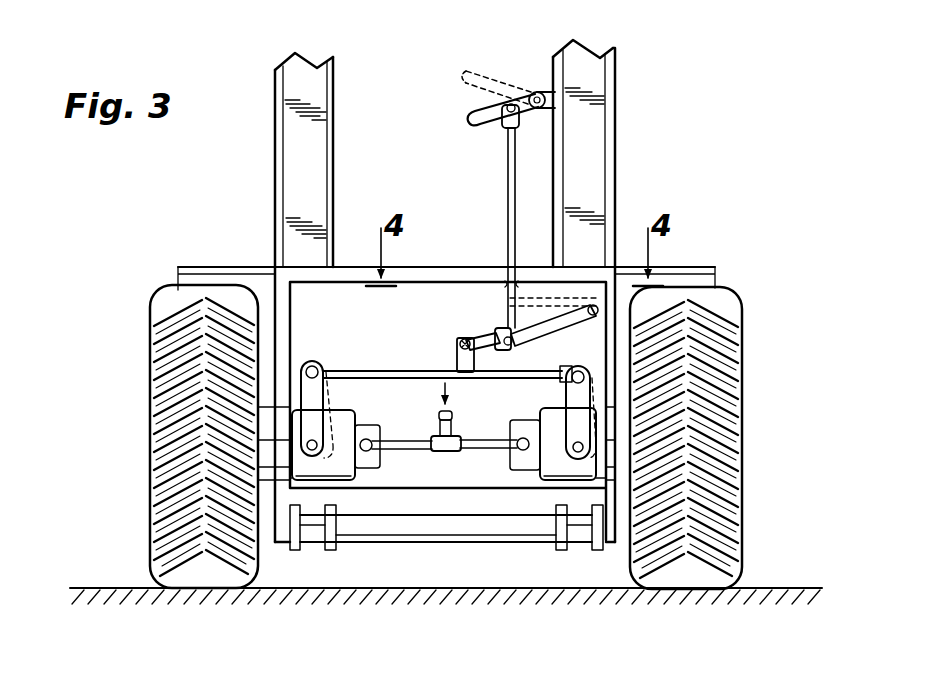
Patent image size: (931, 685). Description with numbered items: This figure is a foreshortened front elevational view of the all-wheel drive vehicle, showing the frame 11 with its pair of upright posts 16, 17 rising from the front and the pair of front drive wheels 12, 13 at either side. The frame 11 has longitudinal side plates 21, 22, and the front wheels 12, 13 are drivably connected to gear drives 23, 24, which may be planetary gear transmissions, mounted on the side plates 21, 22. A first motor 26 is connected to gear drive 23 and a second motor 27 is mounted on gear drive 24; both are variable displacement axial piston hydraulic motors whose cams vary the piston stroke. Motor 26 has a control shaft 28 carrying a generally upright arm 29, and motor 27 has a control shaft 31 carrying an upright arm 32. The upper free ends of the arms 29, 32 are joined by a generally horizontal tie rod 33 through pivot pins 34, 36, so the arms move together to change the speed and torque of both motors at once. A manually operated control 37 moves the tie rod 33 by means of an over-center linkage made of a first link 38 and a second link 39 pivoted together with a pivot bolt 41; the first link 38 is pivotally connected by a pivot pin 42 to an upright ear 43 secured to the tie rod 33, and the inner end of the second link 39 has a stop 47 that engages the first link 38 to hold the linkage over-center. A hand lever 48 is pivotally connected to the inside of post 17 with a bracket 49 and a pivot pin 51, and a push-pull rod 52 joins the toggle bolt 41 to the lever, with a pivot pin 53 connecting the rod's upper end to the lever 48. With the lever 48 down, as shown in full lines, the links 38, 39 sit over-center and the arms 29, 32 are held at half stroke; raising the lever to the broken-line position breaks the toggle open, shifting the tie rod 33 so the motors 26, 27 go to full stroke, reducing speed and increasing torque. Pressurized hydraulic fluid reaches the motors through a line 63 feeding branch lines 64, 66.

The frame 11 is at (272, 266).
The front drive wheel 12 is at (150, 320).
The front drive wheel 13 is at (742, 346).
The upright post 16 is at (283, 109).
The upright post 17 is at (600, 123).
The side plate 21 is at (283, 545).
The side plate 22 is at (608, 545).
The gear drive 23 is at (279, 478).
The gear drive 24 is at (608, 478).
The first motor 26 is at (346, 481).
The second motor 27 is at (546, 481).
The control shaft 28 is at (315, 451).
The upright arm 29 is at (320, 396).
The control shaft 31 is at (575, 452).
The upright arm 32 is at (569, 396).
The tie rod 33 is at (381, 370).
The pivot pin 34 is at (316, 366).
The pivot pin 36 is at (580, 369).
The manually operated control 37 is at (494, 219).
The first link 38 is at (478, 338).
The second link 39 is at (558, 323).
The pivot bolt 41 is at (511, 345).
The pivot pin 42 is at (459, 341).
The upright ear 43 is at (457, 355).
The stop 47 is at (496, 332).
The hand lever 48 is at (476, 110).
The bracket 49 is at (545, 92).
The pivot pin 51 is at (540, 110).
The push-pull rod 52 is at (508, 150).
The pivot pin 53 is at (506, 102).
The line 63 is at (439, 421).
The branch line 64 is at (487, 449).
The branch line 66 is at (401, 452).